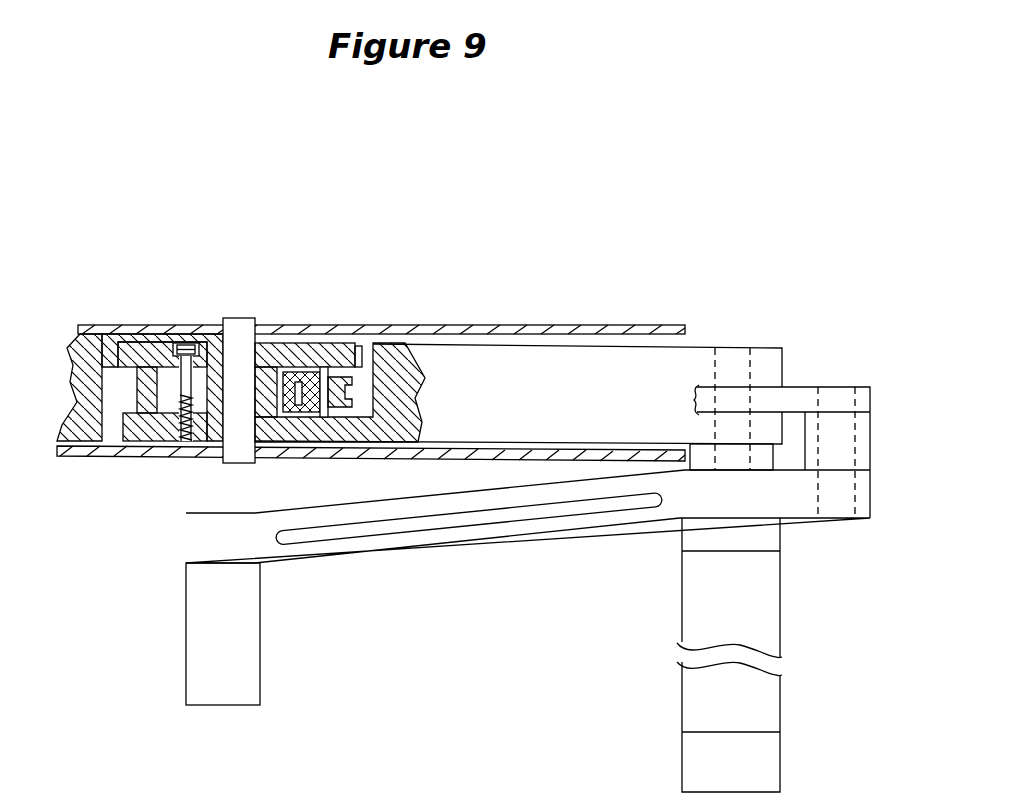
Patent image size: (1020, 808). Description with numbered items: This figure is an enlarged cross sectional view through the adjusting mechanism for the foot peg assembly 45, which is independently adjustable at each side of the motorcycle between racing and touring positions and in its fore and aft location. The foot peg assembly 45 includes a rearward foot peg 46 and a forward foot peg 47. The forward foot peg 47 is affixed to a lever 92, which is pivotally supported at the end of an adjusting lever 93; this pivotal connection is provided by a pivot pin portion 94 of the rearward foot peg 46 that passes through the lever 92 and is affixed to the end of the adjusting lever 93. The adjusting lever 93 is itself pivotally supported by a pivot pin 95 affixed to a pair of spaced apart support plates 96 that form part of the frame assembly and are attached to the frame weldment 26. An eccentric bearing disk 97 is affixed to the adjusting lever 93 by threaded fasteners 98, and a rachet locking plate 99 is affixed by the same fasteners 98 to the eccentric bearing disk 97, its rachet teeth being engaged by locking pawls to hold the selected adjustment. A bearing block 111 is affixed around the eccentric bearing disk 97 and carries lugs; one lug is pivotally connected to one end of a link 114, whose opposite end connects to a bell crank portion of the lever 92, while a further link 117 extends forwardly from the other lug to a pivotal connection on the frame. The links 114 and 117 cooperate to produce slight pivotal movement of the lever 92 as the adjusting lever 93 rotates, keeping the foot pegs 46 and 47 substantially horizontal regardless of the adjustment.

The foot peg assembly 45 is at (688, 232).
The frame weldment 26 is at (96, 350).
The bearing block 111 is at (143, 387).
The threaded fasteners 98 is at (129, 412).
The eccentric bearing disk 97 is at (208, 405).
The pivot pin 95 is at (248, 330).
The rachet locking plate 99 is at (327, 343).
The link 117 is at (355, 400).
The support plates 96 is at (522, 325).
The adjusting lever 93 is at (613, 366).
The pivot pin portion 94 is at (748, 376).
The link 114 is at (806, 392).
The lever 92 is at (420, 540).
The forward foot peg 47 is at (243, 641).
The rearward foot peg 46 is at (693, 697).